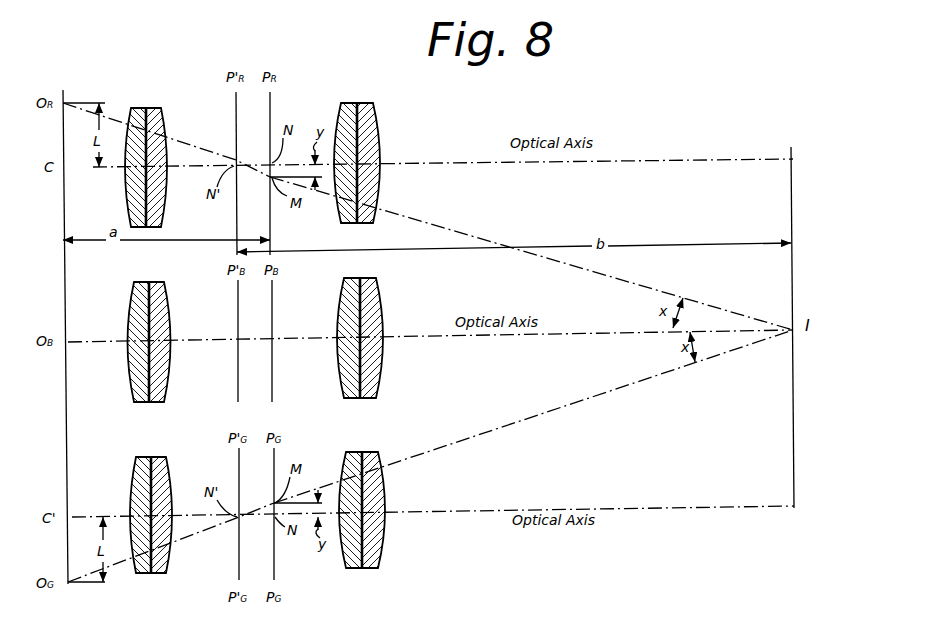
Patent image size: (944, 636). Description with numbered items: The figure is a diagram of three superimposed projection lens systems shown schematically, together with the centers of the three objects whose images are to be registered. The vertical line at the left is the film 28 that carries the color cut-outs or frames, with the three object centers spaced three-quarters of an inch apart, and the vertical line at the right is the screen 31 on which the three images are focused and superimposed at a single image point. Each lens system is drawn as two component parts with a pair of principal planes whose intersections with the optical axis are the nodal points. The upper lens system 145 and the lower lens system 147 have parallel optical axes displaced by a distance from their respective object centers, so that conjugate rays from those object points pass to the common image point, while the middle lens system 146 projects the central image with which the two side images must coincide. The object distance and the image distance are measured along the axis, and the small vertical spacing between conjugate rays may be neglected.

The film 28 is at (63, 290).
The screen 31 is at (795, 424).
The projection lens system 145 is at (282, 156).
The middle projection lens system 146 is at (281, 331).
The projection lens system 147 is at (281, 504).